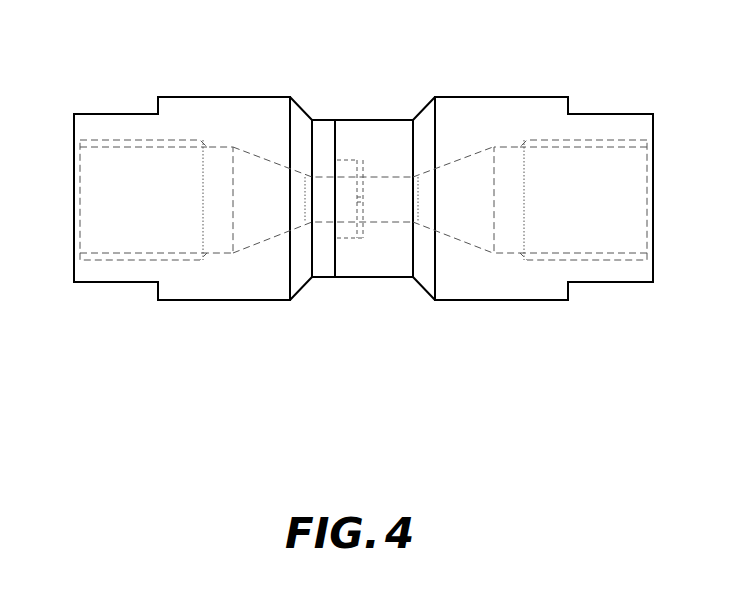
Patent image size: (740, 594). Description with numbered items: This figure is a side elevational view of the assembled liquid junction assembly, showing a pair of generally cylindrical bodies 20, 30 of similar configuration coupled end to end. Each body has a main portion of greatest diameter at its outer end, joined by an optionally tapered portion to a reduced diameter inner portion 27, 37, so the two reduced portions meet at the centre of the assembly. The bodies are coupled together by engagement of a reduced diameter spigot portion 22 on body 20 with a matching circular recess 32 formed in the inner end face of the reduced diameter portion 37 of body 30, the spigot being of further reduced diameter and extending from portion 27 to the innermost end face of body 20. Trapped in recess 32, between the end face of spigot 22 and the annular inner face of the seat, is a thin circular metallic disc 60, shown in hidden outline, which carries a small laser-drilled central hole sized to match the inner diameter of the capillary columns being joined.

The body 20 is at (224, 88).
The body 30 is at (503, 88).
The reduced diameter inner portion 27 is at (323, 120).
The reduced diameter inner portion 37 is at (398, 120).
The spigot portion 22 is at (347, 240).
The circular recess 32 is at (370, 265).
The disc 60 is at (363, 232).